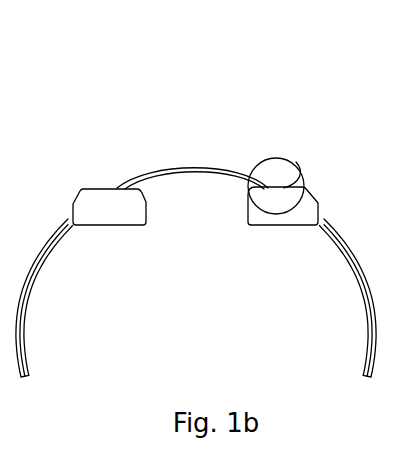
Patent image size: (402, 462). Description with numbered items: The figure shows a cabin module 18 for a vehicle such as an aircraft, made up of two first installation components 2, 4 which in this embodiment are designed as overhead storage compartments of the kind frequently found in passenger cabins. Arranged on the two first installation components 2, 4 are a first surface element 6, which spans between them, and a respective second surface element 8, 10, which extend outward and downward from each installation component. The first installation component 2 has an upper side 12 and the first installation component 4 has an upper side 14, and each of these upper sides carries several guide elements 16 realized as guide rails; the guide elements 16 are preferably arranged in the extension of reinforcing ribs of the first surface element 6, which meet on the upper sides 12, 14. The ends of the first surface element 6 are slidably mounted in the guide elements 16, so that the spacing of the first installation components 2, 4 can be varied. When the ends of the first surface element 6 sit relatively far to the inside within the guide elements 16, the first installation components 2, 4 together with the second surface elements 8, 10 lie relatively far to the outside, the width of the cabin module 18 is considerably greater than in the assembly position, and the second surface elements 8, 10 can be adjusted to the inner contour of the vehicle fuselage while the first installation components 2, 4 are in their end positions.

The first installation component 2 is at (83, 205).
The first installation component 4 is at (306, 207).
The first surface element 6 is at (194, 169).
The second surface element 8 is at (25, 339).
The second surface element 10 is at (364, 336).
The upper side 12 is at (104, 170).
The upper side 14 is at (269, 167).
The guide element 16 is at (113, 188).
The cabin module 18 is at (181, 96).